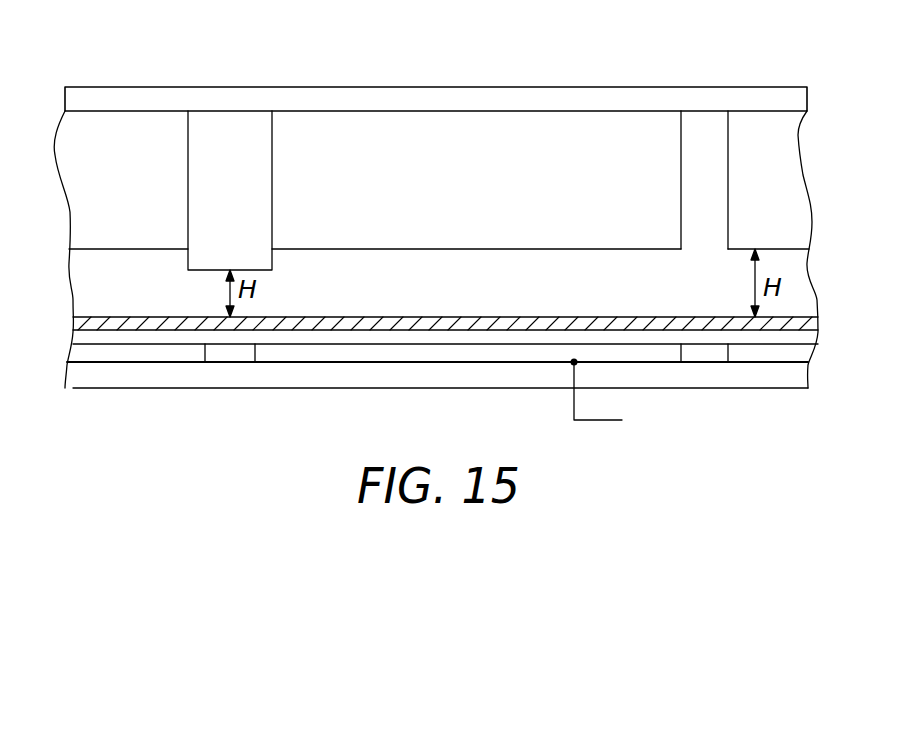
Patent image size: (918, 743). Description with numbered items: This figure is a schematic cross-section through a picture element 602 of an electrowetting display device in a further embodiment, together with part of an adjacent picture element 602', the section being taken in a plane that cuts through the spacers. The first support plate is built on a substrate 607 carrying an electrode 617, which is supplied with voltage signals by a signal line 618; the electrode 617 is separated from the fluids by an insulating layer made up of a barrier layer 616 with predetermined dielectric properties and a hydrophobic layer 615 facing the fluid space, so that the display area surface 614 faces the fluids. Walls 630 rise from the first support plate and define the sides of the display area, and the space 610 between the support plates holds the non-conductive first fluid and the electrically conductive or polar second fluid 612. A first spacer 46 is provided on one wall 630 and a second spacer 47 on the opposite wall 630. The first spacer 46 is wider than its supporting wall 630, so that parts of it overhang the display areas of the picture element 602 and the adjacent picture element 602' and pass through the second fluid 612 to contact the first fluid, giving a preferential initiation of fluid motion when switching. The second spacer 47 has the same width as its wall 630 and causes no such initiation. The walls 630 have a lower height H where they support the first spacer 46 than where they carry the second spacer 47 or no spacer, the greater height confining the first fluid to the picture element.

The adjacent picture element 602' is at (88, 202).
The picture element 602 is at (635, 203).
The substrate 607 is at (765, 97).
The space 610 is at (357, 147).
The second fluid 612 is at (578, 147).
The first spacer 46 is at (200, 182).
The second spacer 47 is at (718, 183).
The wall 630 is at (470, 265).
The display area surface 614 is at (566, 315).
The hydrophobic layer 615 is at (330, 322).
The barrier layer 616 is at (405, 337).
The electrode 617 is at (480, 352).
The signal line 618 is at (596, 422).